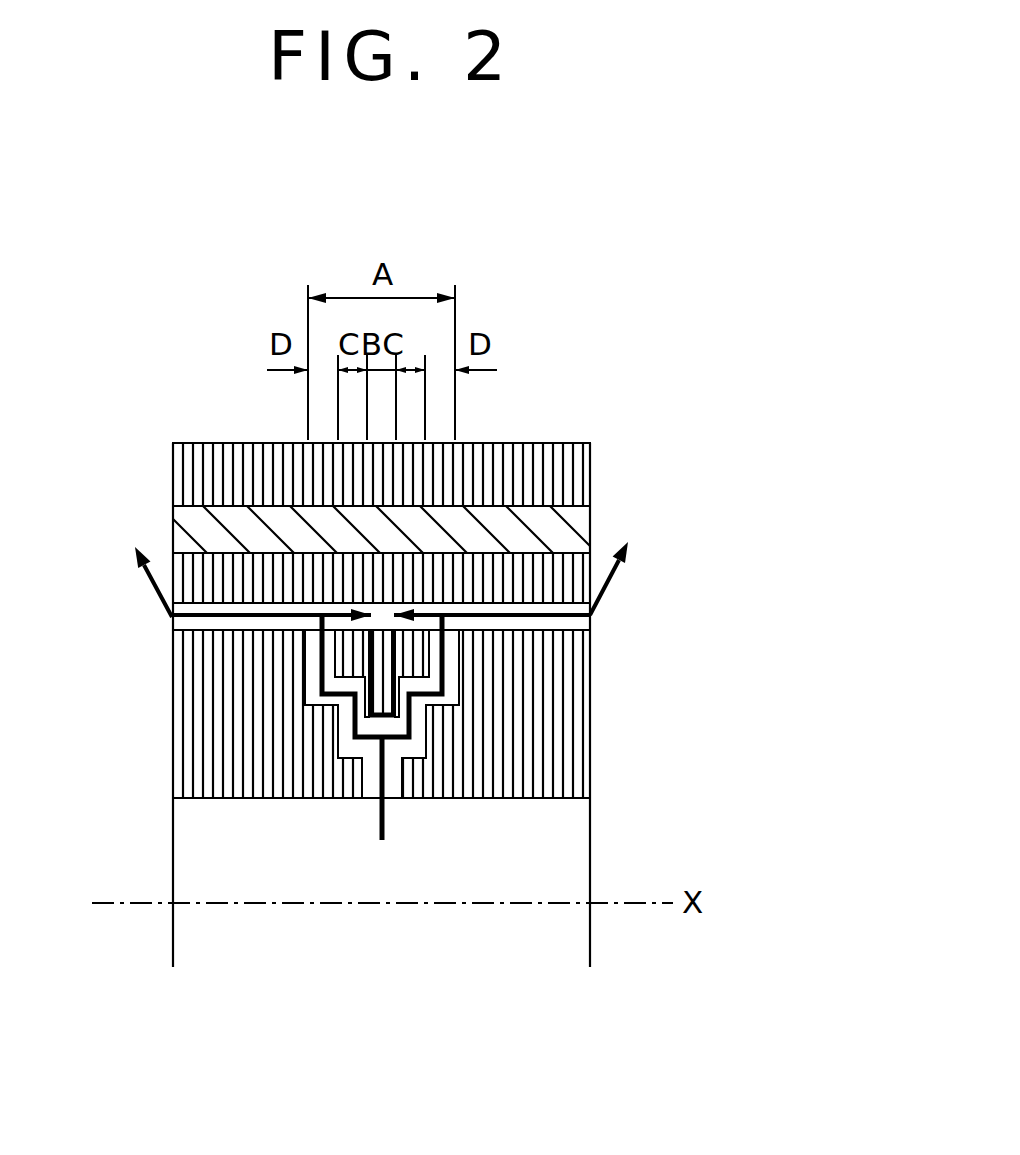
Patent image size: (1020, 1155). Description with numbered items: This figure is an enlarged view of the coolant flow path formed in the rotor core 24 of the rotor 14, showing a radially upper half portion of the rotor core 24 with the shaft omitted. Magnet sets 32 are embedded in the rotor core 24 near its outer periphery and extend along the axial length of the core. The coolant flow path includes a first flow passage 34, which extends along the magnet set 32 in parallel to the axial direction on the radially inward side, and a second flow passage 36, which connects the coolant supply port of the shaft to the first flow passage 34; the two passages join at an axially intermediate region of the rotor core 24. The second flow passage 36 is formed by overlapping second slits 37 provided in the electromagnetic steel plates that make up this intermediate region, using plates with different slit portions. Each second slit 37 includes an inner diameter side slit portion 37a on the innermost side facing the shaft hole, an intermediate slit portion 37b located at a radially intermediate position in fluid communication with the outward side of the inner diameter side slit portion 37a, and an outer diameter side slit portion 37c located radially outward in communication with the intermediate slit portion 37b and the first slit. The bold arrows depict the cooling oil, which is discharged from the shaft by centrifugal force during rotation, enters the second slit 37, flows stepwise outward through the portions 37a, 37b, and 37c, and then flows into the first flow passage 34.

The rotor 14 is at (672, 518).
The rotor core 24 is at (608, 463).
The magnet set 32 is at (197, 520).
The first flow passage 34 is at (573, 627).
The second flow passage 36 is at (470, 667).
The second slit 37 is at (528, 735).
The inner diameter side slit portion 37a is at (393, 780).
The intermediate slit portion 37b is at (425, 735).
The outer diameter side slit portion 37c is at (450, 693).